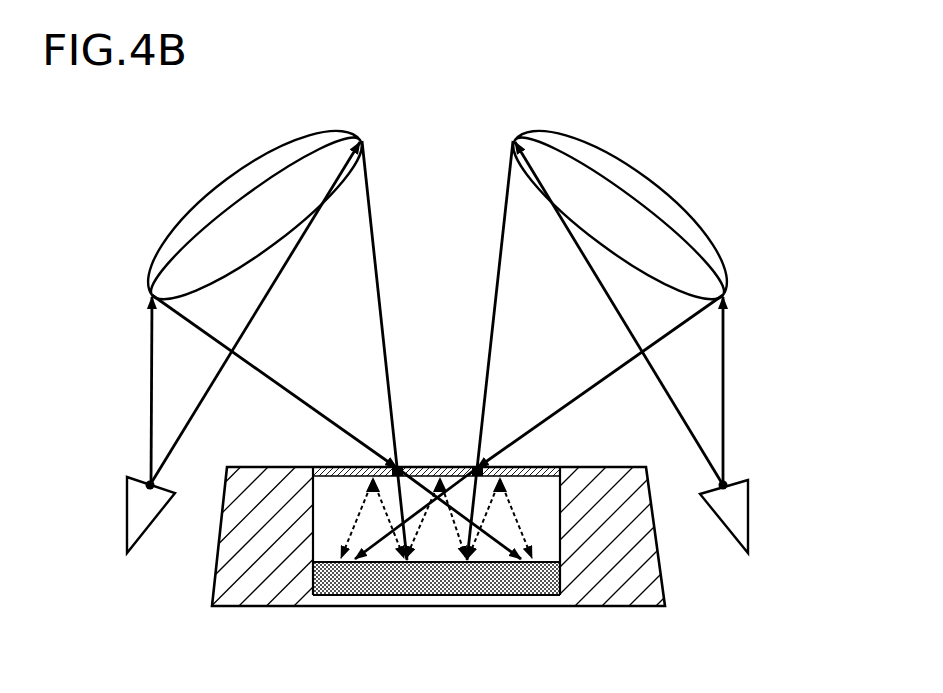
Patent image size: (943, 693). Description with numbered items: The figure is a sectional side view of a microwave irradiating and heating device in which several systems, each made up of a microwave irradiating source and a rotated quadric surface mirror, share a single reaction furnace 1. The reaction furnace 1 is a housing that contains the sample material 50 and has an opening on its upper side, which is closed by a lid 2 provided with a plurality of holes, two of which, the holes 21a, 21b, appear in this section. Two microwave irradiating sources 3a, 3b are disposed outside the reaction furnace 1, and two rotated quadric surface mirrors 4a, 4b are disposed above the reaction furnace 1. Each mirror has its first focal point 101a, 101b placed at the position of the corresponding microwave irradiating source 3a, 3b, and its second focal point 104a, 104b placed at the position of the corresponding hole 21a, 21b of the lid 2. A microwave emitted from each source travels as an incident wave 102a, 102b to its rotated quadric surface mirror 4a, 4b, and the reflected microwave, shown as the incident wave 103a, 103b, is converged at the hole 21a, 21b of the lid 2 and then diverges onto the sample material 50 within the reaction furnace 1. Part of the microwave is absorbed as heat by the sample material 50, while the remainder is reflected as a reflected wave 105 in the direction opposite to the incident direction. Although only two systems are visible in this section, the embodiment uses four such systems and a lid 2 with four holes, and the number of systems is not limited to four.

The reaction furnace 1 is at (248, 545).
The lid 2 is at (338, 466).
The microwave irradiating source 3a is at (750, 512).
The microwave irradiating source 3b is at (127, 505).
The rotated quadric surface mirror 4a is at (670, 185).
The rotated quadric surface mirror 4b is at (208, 183).
The hole 21a is at (470, 466).
The hole 21b is at (410, 466).
The sample material 50 is at (433, 582).
The first focal point 101a is at (726, 481).
The first focal point 101b is at (148, 482).
The incident wave 102a is at (724, 372).
The incident wave 102b is at (150, 381).
The incident wave 103a is at (500, 245).
The incident wave 103b is at (372, 215).
The second focal point 104a is at (487, 466).
The second focal point 104b is at (390, 466).
The reflected wave 105 is at (482, 522).